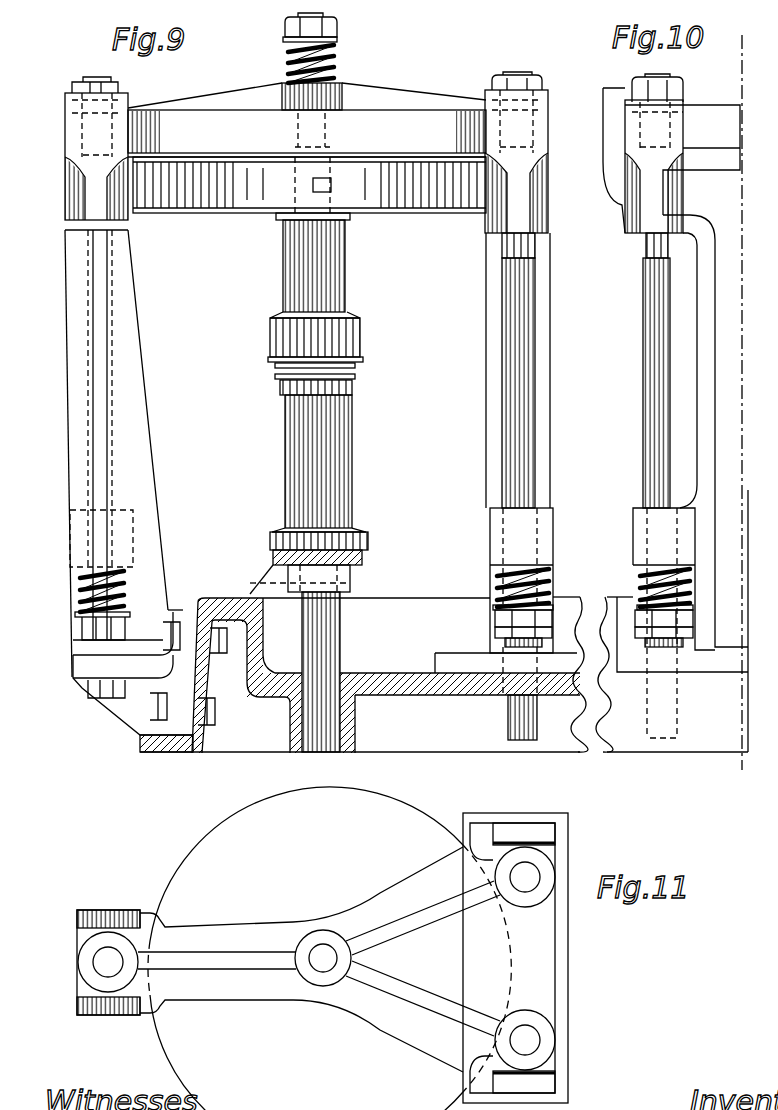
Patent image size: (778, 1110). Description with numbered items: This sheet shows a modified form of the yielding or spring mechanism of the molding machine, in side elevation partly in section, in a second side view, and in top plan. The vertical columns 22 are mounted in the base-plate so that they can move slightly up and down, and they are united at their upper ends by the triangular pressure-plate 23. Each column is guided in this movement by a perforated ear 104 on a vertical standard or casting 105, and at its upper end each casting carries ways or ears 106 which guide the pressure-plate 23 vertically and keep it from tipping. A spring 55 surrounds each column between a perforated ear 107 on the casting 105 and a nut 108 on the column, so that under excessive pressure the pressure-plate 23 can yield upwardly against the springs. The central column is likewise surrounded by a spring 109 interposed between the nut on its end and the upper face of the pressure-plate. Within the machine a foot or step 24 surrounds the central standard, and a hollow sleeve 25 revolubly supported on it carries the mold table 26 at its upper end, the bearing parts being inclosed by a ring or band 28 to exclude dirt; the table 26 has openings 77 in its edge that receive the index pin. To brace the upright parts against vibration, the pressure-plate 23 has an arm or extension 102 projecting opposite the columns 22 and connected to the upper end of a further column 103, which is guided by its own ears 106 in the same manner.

In FIG. 9, the columns 22 is at (538, 422).
In FIG. 10, the columns 22 is at (643, 415).
In FIG. 9, the pressure-plate 23 is at (307, 133).
In FIG. 10, the pressure-plate 23 is at (682, 160).
In FIG. 11, the pressure-plate 23 is at (346, 948).
In FIG. 9, the foot or step 24 is at (357, 560).
In FIG. 9, the hollow column or sleeve 25 is at (347, 276).
In FIG. 9, the mold plate or table 26 is at (309, 185).
In FIG. 9, the ring or band 28 is at (366, 538).
In FIG. 10, the springs 55 is at (637, 578).
In FIG. 9, the openings or recesses 77 is at (330, 188).
In FIG. 9, the arm or extension 102 is at (168, 122).
In FIG. 11, the arm or extension 102 is at (190, 983).
In FIG. 9, the column 103 is at (113, 402).
In FIG. 11, the column 103 is at (110, 947).
In FIG. 9, the perforated ears 104 is at (500, 658).
In FIG. 10, the perforated ears 104 is at (637, 665).
In FIG. 9, the vertical standards or castings 105 is at (598, 363).
In FIG. 10, the vertical standards or castings 105 is at (703, 365).
In FIG. 10, the ways or ears 106 is at (604, 118).
In FIG. 9, the perforated ears 107 is at (595, 533).
In FIG. 10, the perforated ears 107 is at (645, 533).
In FIG. 9, the nuts 108 is at (497, 614).
In FIG. 10, the nuts 108 is at (645, 625).
In FIG. 9, the spring 109 is at (333, 60).